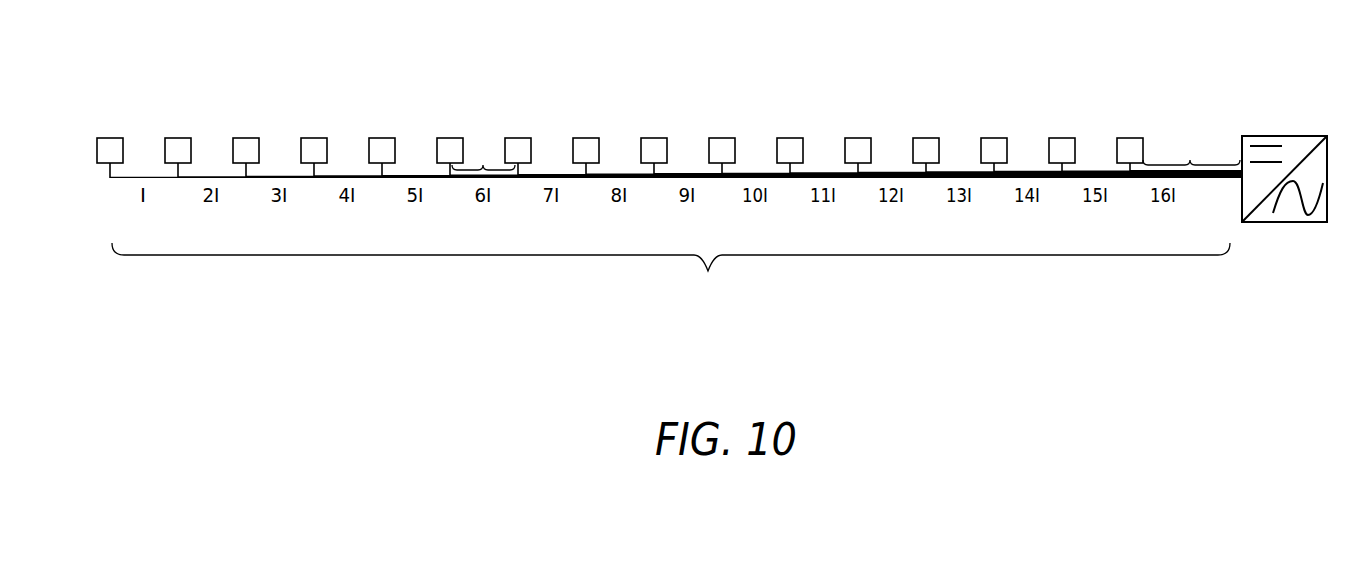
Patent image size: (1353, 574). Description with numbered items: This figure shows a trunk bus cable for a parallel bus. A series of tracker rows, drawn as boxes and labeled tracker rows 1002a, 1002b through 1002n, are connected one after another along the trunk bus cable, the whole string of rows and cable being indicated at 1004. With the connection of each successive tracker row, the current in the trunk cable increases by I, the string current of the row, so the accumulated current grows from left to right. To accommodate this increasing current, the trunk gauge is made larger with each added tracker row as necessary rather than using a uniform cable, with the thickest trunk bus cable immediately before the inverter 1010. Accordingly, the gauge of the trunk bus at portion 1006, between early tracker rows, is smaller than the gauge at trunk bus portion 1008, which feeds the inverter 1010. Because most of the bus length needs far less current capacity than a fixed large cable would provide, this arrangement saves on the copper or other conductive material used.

The tracker row 1002a is at (110, 138).
The tracker row 1002b is at (178, 138).
The tracker row 1002n is at (1130, 138).
The string of power modules 1004 is at (671, 270).
The trunk bus portion 1006 is at (483, 165).
The trunk bus portion 1008 is at (1190, 160).
The inverter 1010 is at (1277, 222).